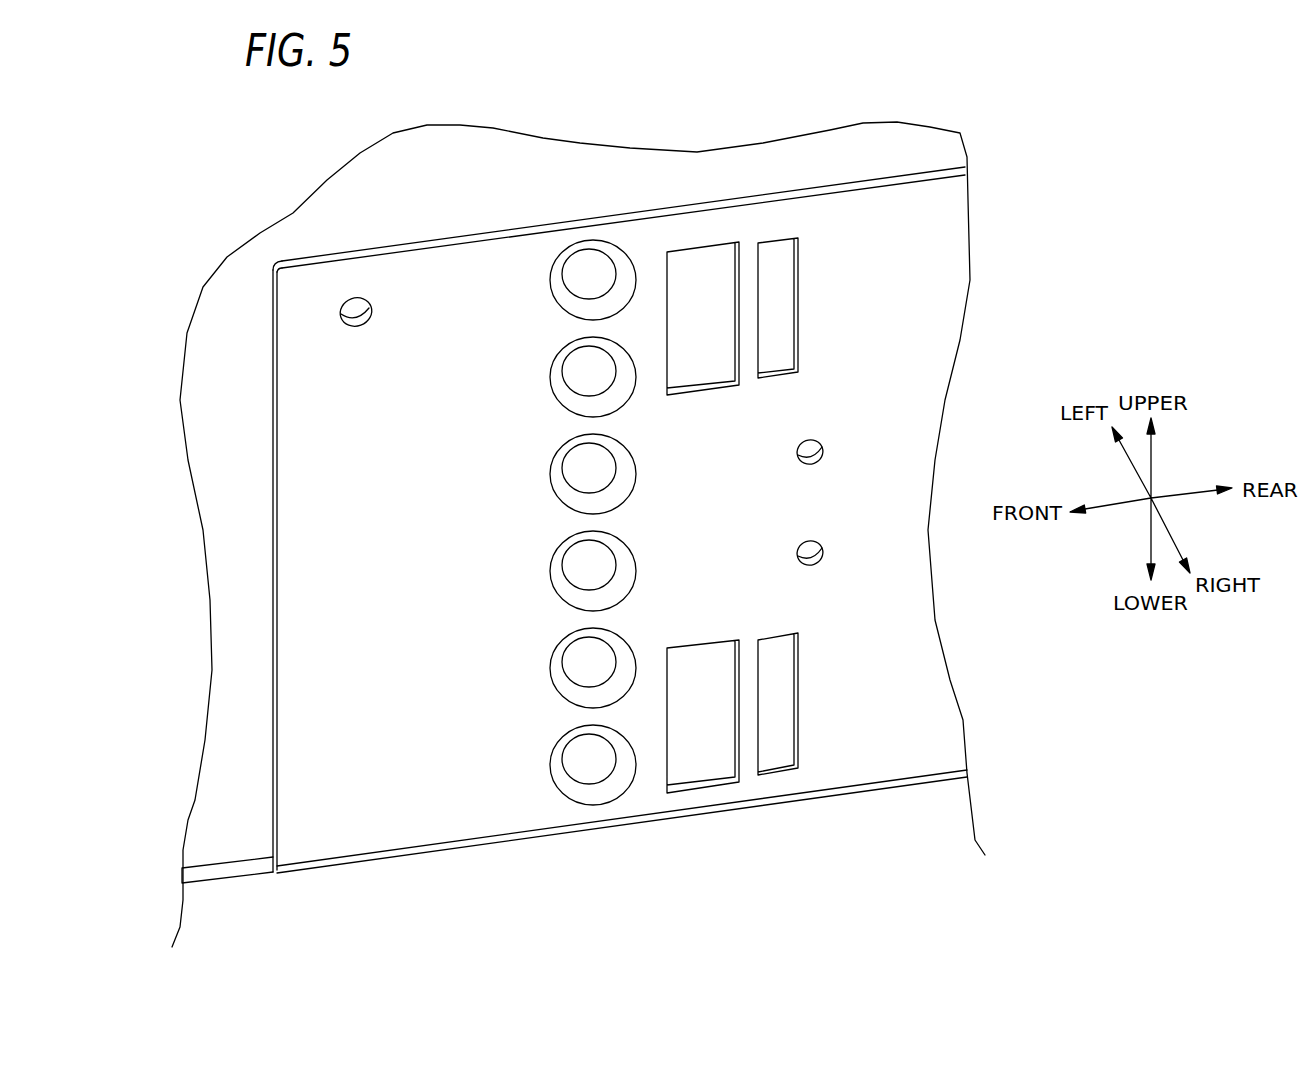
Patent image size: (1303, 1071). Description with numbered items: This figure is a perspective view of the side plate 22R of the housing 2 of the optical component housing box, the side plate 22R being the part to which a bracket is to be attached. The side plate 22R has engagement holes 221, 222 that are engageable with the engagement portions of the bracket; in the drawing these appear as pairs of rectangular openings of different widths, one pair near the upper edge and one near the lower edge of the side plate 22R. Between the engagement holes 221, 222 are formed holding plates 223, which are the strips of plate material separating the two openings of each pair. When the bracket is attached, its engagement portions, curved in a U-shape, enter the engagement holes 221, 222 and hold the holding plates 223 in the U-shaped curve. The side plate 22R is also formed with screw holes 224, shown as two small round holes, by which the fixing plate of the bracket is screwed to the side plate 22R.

The housing 2 is at (320, 217).
The side plate 22R is at (447, 780).
The engagement hole 221 is at (782, 260).
The engagement hole 222 is at (698, 260).
The holding plate 223 is at (747, 253).
The screw hole 224 is at (823, 453).